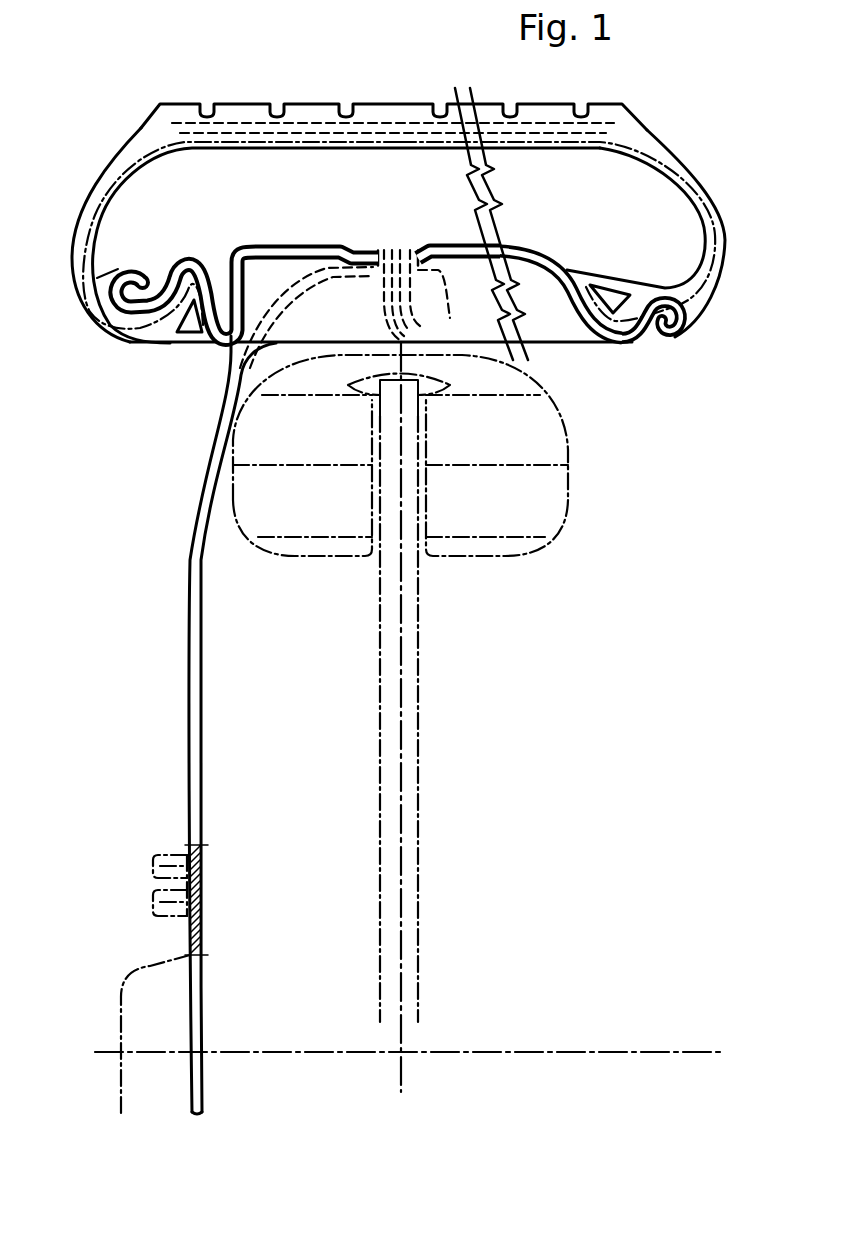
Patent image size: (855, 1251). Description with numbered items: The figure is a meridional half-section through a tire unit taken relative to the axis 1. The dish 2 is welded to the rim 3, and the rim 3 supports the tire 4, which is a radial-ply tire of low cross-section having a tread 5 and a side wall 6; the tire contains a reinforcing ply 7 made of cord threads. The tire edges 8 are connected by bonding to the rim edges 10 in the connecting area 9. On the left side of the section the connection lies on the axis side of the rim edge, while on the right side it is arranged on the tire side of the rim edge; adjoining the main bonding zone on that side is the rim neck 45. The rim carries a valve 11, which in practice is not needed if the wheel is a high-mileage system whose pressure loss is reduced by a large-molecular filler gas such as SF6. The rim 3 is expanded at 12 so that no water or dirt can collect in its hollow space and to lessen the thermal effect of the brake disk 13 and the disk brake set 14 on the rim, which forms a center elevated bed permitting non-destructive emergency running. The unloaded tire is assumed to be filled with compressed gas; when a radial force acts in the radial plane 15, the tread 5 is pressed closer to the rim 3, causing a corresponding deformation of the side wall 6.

The axis 1 is at (557, 1052).
The dish 2 is at (193, 752).
The rim 3 is at (298, 253).
The tire 4 is at (379, 190).
The tread 5 is at (319, 115).
The side wall 6 is at (92, 192).
The reinforcing ply 7 is at (82, 237).
The tire edges 8 is at (118, 330).
The connecting area 9 is at (122, 383).
The rim edges 10 is at (147, 308).
The valve 11 is at (403, 260).
The expanded portion of the rim 12 is at (530, 287).
The brake disk 13 is at (418, 670).
The disk brake set 14 is at (550, 478).
The radial plane 15 is at (403, 745).
The rim neck 45 is at (627, 325).